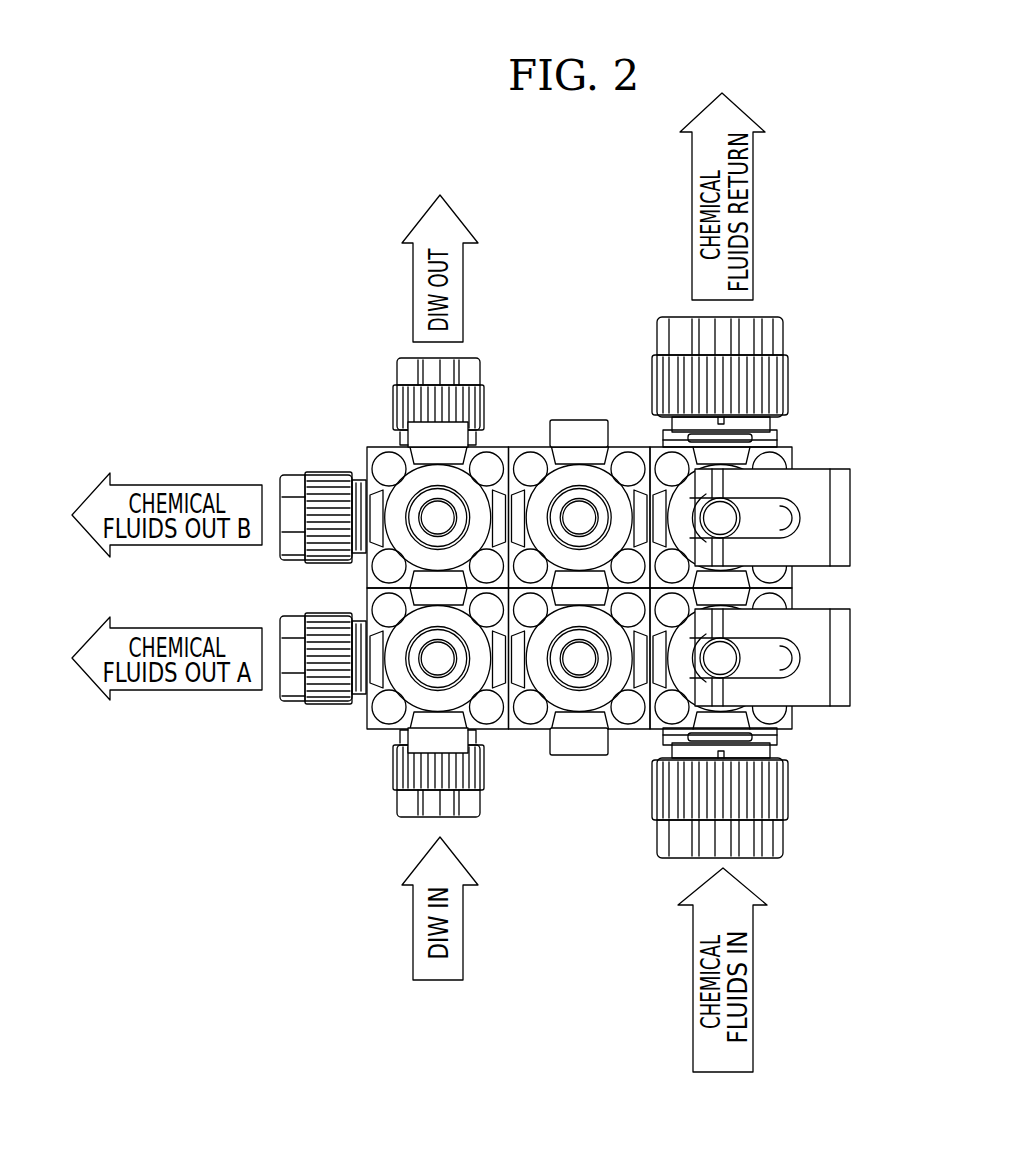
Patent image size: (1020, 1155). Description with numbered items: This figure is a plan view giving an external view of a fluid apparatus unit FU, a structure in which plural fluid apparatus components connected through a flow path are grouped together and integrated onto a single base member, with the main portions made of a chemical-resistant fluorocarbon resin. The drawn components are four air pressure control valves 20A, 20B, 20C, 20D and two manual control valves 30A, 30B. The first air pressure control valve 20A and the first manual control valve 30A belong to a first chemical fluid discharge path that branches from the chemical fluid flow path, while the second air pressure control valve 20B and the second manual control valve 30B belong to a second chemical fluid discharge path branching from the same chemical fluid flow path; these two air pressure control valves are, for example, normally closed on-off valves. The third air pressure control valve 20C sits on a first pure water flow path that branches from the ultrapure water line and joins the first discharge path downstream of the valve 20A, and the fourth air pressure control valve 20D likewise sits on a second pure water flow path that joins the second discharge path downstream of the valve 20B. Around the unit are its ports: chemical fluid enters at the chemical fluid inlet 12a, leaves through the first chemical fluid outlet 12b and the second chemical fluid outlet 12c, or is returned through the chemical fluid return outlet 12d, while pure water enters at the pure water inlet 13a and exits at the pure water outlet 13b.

The fluid apparatus unit FU is at (796, 166).
The chemical fluid inlet 12a is at (757, 860).
The first chemical fluid outlet 12b is at (280, 695).
The second chemical fluid outlet 12c is at (280, 487).
The chemical fluid return outlet 12d is at (765, 318).
The pure water inlet 13a is at (468, 818).
The pure water outlet 13b is at (468, 358).
The first air pressure control valve 20A is at (622, 730).
The second air pressure control valve 20B is at (533, 447).
The third air pressure control valve 20C is at (380, 730).
The fourth air pressure control valve 20D is at (370, 450).
The first manual control valve 30A is at (795, 728).
The second manual control valve 30B is at (795, 448).